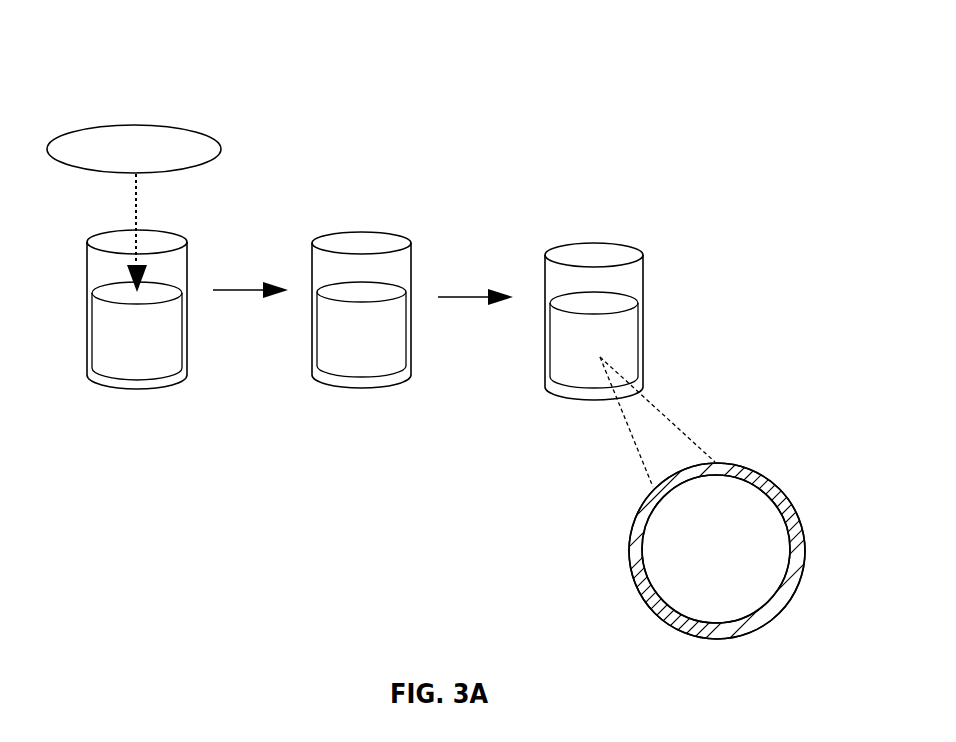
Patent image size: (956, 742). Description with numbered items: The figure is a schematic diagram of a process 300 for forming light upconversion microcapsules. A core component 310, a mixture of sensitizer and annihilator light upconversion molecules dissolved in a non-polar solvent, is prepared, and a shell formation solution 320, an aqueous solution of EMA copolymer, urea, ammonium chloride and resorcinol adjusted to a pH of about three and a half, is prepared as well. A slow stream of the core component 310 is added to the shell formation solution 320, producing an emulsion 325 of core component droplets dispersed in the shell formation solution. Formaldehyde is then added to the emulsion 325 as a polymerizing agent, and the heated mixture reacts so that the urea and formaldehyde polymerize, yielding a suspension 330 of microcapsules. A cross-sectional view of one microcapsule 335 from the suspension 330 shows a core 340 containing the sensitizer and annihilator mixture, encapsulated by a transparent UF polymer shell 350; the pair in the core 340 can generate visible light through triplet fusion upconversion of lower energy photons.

The process 300 is at (105, 38).
The core component 310 is at (135, 125).
The shell formation solution 320 is at (92, 336).
The emulsion 325 is at (317, 337).
The suspension 330 is at (550, 346).
The microcapsule 335 is at (755, 445).
The core 340 is at (680, 582).
The UF polymer shell 350 is at (725, 639).